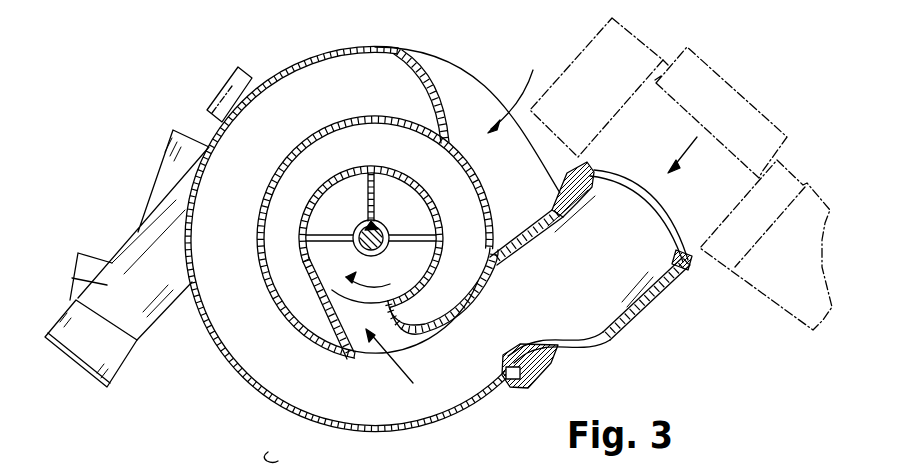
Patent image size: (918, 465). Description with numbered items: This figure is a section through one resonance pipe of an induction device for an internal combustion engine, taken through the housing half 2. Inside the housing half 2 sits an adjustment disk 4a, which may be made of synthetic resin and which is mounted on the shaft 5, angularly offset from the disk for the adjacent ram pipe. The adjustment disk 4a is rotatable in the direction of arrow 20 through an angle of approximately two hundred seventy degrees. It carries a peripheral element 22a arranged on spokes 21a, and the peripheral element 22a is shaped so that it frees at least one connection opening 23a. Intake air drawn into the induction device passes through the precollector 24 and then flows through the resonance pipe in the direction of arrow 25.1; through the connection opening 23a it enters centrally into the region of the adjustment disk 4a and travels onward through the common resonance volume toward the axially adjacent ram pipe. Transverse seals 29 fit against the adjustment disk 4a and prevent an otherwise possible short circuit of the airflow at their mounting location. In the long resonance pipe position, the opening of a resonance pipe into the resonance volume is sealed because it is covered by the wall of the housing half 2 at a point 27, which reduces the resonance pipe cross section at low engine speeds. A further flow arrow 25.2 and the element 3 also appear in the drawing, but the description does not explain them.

The housing half 2 is at (440, 70).
The spiral housing wall 3 is at (453, 412).
The adjustment disk 4a is at (298, 298).
The shaft 5 is at (386, 224).
The arrow 20 is at (365, 278).
The spokes 21a is at (338, 231).
The peripheral element 22a is at (450, 295).
The connection opening 23a is at (372, 315).
The precollector 24 is at (699, 228).
The arrow 25.1 is at (688, 147).
The flow direction 25.2 is at (372, 360).
The point 27 is at (518, 88).
The transverse seals 29 is at (508, 260).